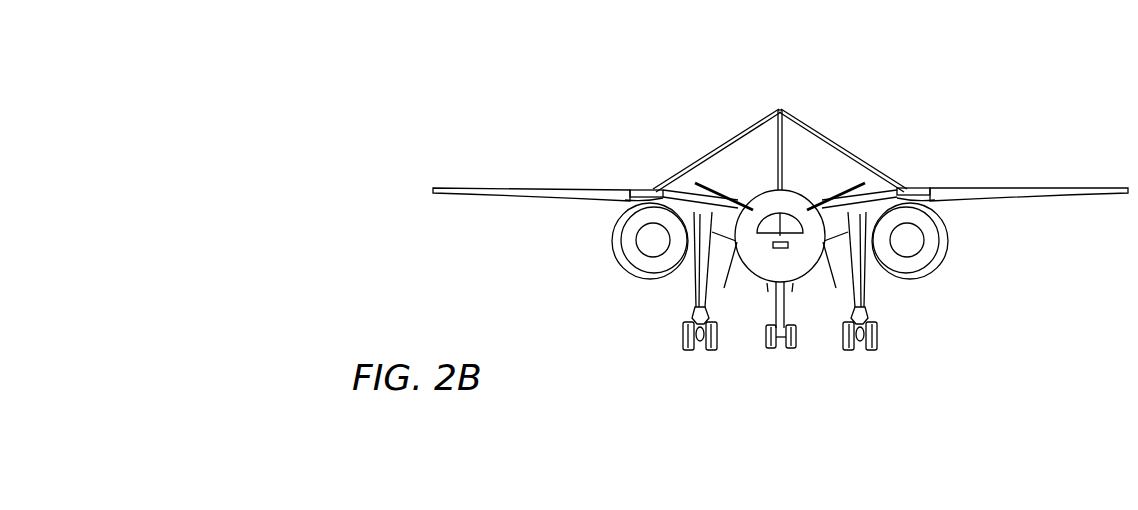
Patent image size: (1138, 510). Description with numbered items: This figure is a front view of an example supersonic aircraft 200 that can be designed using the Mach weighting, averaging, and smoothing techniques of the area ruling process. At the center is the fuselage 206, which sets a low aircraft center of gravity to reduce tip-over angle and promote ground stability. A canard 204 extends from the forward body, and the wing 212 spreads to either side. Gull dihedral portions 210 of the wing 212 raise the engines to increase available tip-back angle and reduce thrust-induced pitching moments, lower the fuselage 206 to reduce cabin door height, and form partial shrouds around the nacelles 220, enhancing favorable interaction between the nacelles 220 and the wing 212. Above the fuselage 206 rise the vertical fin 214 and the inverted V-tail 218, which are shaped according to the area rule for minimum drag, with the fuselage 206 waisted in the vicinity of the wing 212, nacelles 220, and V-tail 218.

The supersonic aircraft 200 is at (501, 85).
The canard 204 is at (827, 200).
The fuselage 206 is at (756, 285).
The gull dihedral portions 210 is at (713, 210).
The wing 212 is at (1040, 188).
The vertical fin 214 is at (776, 133).
The inverted V-tail 218 is at (712, 152).
The nacelles 220 is at (948, 252).